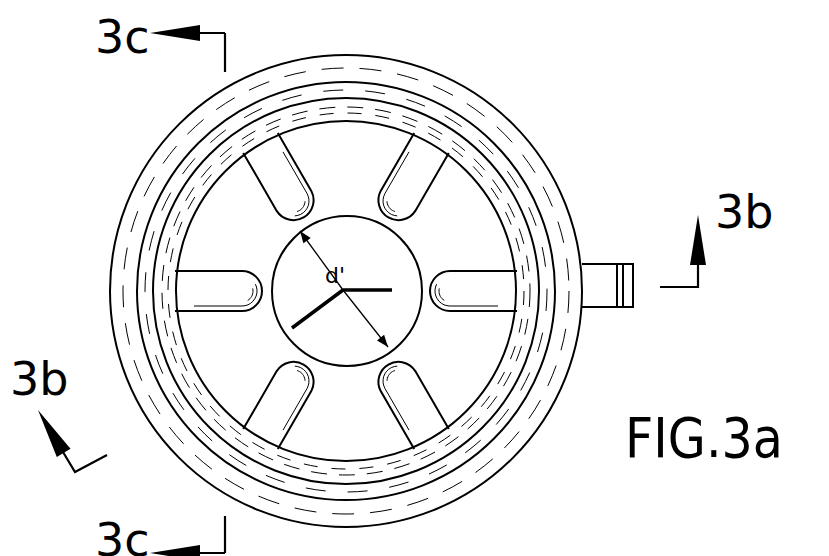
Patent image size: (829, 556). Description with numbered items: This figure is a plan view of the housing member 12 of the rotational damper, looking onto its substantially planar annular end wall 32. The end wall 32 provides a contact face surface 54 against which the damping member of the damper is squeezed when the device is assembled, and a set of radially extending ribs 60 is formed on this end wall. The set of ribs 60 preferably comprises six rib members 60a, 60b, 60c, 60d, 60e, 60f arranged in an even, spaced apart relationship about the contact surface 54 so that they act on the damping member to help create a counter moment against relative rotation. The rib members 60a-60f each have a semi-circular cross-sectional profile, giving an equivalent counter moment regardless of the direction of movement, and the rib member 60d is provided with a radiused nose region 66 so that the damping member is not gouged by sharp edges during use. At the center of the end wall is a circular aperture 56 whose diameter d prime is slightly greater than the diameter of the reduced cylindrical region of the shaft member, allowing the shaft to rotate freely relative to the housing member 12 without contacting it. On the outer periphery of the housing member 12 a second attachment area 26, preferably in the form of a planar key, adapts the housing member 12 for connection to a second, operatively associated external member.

The housing member 12 is at (547, 159).
The second attachment area 26 is at (597, 315).
The annular end wall 32 is at (347, 447).
The contact face surface 54 is at (383, 137).
The circular aperture 56 is at (423, 260).
The set of radially extending ribs 60 is at (375, 268).
The first rib member 60a is at (231, 284).
The rib member 60b is at (290, 191).
The rib member 60c is at (405, 192).
The rib member 60d is at (492, 293).
The rib member 60e is at (410, 410).
The rib member 60f is at (284, 393).
The radiused nose region 66 is at (430, 285).